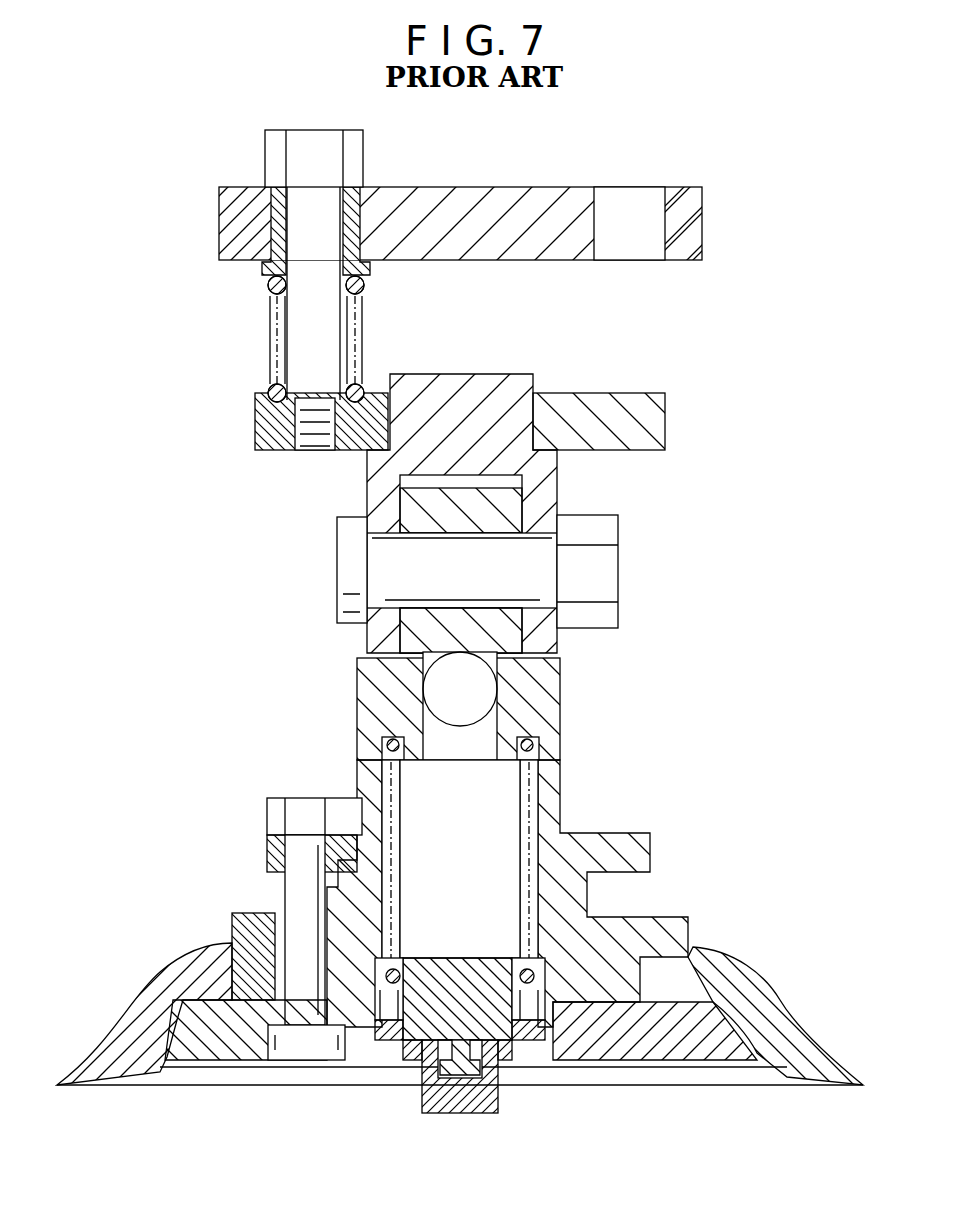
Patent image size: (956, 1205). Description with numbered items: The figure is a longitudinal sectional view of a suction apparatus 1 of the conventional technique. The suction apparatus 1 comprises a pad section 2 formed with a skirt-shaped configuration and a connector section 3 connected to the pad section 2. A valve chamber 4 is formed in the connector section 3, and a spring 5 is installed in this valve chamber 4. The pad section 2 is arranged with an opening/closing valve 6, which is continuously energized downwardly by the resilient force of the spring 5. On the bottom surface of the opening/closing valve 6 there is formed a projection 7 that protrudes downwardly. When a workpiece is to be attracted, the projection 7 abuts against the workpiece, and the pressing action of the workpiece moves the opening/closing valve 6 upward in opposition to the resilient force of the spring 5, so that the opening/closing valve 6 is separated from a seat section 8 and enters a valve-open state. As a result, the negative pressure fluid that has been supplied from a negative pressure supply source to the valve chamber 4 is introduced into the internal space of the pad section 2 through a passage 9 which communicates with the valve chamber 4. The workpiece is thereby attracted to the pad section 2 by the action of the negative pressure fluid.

The suction apparatus 1 is at (785, 131).
The pad section 2 is at (746, 966).
The connector section 3 is at (570, 695).
The valve chamber 4 is at (470, 871).
The spring 5 is at (538, 745).
The opening/closing valve 6 is at (540, 1000).
The projection 7 is at (462, 1113).
The seat section 8 is at (392, 1018).
The passage 9 is at (420, 1045).